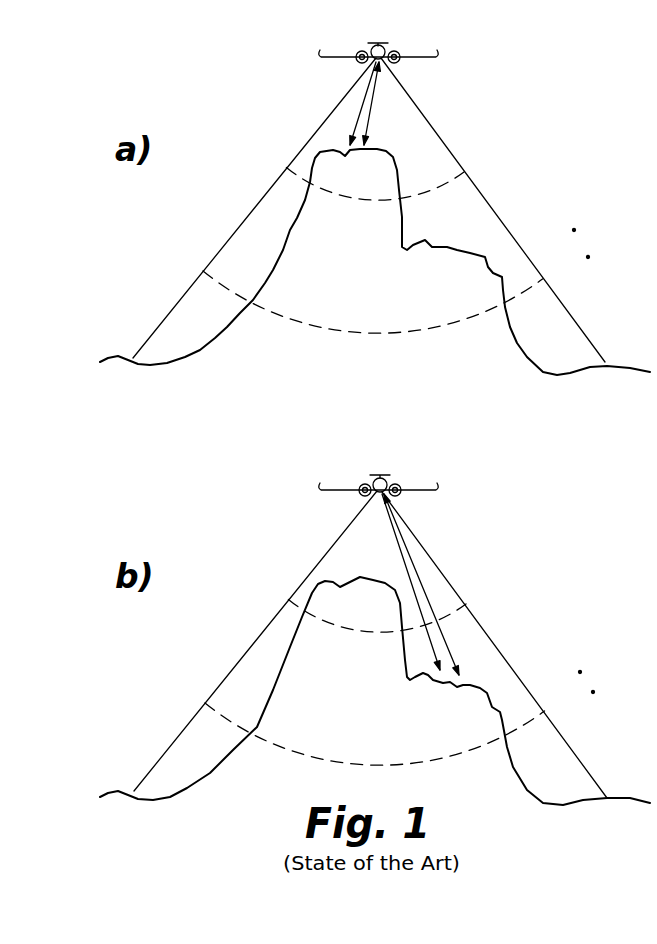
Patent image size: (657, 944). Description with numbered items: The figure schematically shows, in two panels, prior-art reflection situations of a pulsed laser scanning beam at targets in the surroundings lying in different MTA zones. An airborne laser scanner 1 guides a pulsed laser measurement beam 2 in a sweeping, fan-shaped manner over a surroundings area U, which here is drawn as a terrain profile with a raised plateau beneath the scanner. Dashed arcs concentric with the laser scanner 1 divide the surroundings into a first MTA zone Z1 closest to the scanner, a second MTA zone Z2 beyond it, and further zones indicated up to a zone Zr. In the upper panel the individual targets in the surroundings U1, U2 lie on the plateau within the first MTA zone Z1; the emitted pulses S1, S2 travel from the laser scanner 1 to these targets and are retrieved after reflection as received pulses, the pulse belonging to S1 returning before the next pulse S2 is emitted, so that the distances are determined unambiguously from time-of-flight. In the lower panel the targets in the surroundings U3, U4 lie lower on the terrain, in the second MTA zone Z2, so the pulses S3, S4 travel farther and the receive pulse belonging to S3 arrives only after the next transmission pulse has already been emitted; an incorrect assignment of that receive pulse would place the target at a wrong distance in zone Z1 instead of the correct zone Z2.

The airborne laser scanner 1 is at (384, 50).
The pulsed laser measurement beam 2 is at (340, 128).
The surroundings area U is at (513, 345).
The target in the surroundings U1 is at (342, 152).
The target in the surroundings U2 is at (366, 152).
The target in the surroundings U3 is at (447, 683).
The target in the surroundings U4 is at (463, 685).
The first MTA zone Z1 is at (440, 148).
The second MTA zone Z2 is at (485, 215).
The MTA zone Zr is at (565, 315).
The transmission pulse S1 is at (358, 112).
The transmission pulse S2 is at (372, 102).
The transmission pulse S3 is at (400, 553).
The transmission pulse S4 is at (413, 563).